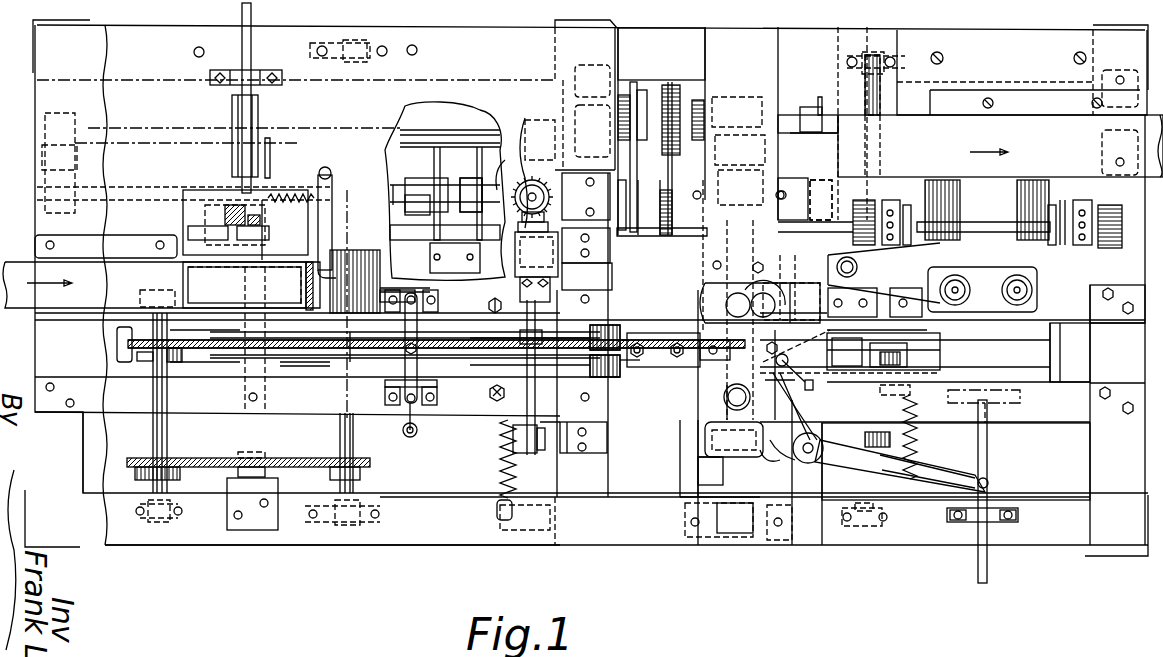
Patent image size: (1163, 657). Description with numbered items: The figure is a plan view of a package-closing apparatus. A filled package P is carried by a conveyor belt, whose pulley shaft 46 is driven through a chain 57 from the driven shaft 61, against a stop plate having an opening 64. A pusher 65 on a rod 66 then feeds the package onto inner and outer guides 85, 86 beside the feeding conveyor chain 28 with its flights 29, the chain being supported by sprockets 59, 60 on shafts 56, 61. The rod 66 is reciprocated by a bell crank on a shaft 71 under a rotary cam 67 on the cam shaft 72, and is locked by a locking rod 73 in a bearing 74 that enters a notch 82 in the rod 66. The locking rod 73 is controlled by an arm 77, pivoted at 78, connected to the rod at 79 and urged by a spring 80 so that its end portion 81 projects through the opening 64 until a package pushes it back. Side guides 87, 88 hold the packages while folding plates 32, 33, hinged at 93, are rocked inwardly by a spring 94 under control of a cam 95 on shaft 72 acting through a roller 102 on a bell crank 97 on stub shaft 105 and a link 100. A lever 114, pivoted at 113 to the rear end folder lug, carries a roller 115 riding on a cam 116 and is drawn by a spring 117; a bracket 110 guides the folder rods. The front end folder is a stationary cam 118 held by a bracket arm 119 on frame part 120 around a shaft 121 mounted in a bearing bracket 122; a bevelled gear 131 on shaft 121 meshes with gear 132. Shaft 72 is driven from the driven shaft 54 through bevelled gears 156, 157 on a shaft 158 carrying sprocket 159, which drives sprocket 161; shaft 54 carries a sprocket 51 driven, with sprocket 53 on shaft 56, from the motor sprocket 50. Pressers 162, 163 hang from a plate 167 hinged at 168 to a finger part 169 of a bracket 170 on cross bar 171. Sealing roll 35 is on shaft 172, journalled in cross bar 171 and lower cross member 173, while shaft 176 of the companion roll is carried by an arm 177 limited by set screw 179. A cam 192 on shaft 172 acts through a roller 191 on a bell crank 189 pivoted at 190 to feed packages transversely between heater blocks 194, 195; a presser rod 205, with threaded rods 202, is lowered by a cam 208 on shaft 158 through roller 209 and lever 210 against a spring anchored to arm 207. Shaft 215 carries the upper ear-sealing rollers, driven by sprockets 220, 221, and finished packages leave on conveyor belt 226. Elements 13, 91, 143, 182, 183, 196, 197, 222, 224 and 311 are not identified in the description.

The rod 66 is at (242, 37).
The rotary cam 67 is at (266, 152).
The spring 80 is at (314, 195).
The pivot 78 is at (331, 170).
The notch 82 is at (220, 212).
The pivotal connection 79 is at (320, 205).
The arm 77 is at (325, 222).
The locking rod 73 is at (268, 235).
The supporting bearing 74 is at (240, 240).
The pusher 65 is at (180, 233).
The pivot 113 is at (20, 262).
The inner guide 85 is at (222, 318).
The laterally extending end portion 81 is at (300, 280).
The opening 64 is at (313, 285).
The lever 114 is at (395, 237).
The inner side guide 87 is at (117, 330).
The feeding conveyor chain 28 is at (128, 344).
The flights or pushers 29 is at (137, 357).
The sprocket 59 is at (150, 375).
The outer side guide 88 is at (220, 378).
The outer guide 86 is at (318, 377).
The post 91 is at (400, 326).
The driven shaft 61 is at (152, 428).
The chain 57 is at (207, 458).
The shaft 46 is at (355, 445).
The shaft 71 is at (422, 130).
The roller 115 is at (420, 195).
The cam shaft 72 is at (395, 190).
The rotary cam 116 is at (470, 178).
The roller 102 is at (478, 215).
The bevelled gear 132 is at (535, 125).
The cam 95 is at (480, 160).
The bell crank 97 is at (512, 173).
The bearing bracket 122 is at (548, 255).
The bevelled gear 131 is at (572, 208).
The sprocket 159 is at (635, 90).
The shaft 13 is at (640, 95).
The sprocket 161 is at (666, 168).
The sprocket 221 is at (692, 150).
The bevelled gear 157 is at (718, 97).
The bevelled gear 156 is at (752, 135).
The sprocket 220 is at (748, 205).
The shaft 158 is at (790, 115).
The rotary cam 208 is at (822, 100).
The roller 209 is at (810, 132).
The lever 210 is at (838, 164).
The conveyor belt 226 is at (944, 136).
The shaft 215 is at (1010, 213).
The shaft 222 is at (883, 203).
The bracket 224 is at (1105, 176).
The bracket 110 is at (900, 210).
The stationary frame part or arm 207 is at (815, 200).
The stub shaft 105 is at (432, 290).
The side folder 33 is at (420, 300).
The link 100 is at (490, 305).
The side folder 32 is at (417, 390).
The hinge 93 is at (420, 430).
The shaft 121 is at (520, 400).
The frame part 120 is at (522, 453).
The spring 94 is at (498, 472).
The stationary cam 118 is at (542, 353).
The bracket arm 119 is at (575, 412).
The presser 162 is at (590, 320).
The presser 163 is at (595, 402).
The hinge 168 is at (623, 332).
The plate 167 is at (647, 333).
The member 311 is at (672, 330).
The finger part 169 is at (678, 350).
The vertical shaft 176 is at (735, 303).
The lower cross member 173 is at (752, 270).
The arm 177 is at (785, 283).
The rod 205 is at (840, 258).
The screw-threaded rods 202 is at (982, 289).
The roller 191 is at (815, 336).
The heater block 194 is at (925, 331).
The block 196 is at (1058, 345).
The heater block 195 is at (1085, 315).
The member 197 is at (1020, 406).
The adjustable set screw 179 is at (805, 385).
The bracket 170 is at (805, 400).
The sprocket 60 is at (887, 416).
The spring 143 is at (898, 437).
The shaft 56 is at (830, 470).
The sprocket 53 is at (900, 470).
The pivot 190 is at (820, 465).
The bell crank 189 is at (828, 470).
The sprocket 50 is at (990, 460).
The panel 183 is at (990, 470).
The sealing wheel 35 is at (724, 398).
The shaft 172 is at (700, 393).
The sprocket 51 is at (702, 447).
The cross bar 171 is at (700, 455).
The driven shaft 54 is at (698, 475).
The cam 192 is at (740, 490).
The member 182 is at (710, 465).
The spring 117 is at (388, 550).
The package P is at (183, 270).